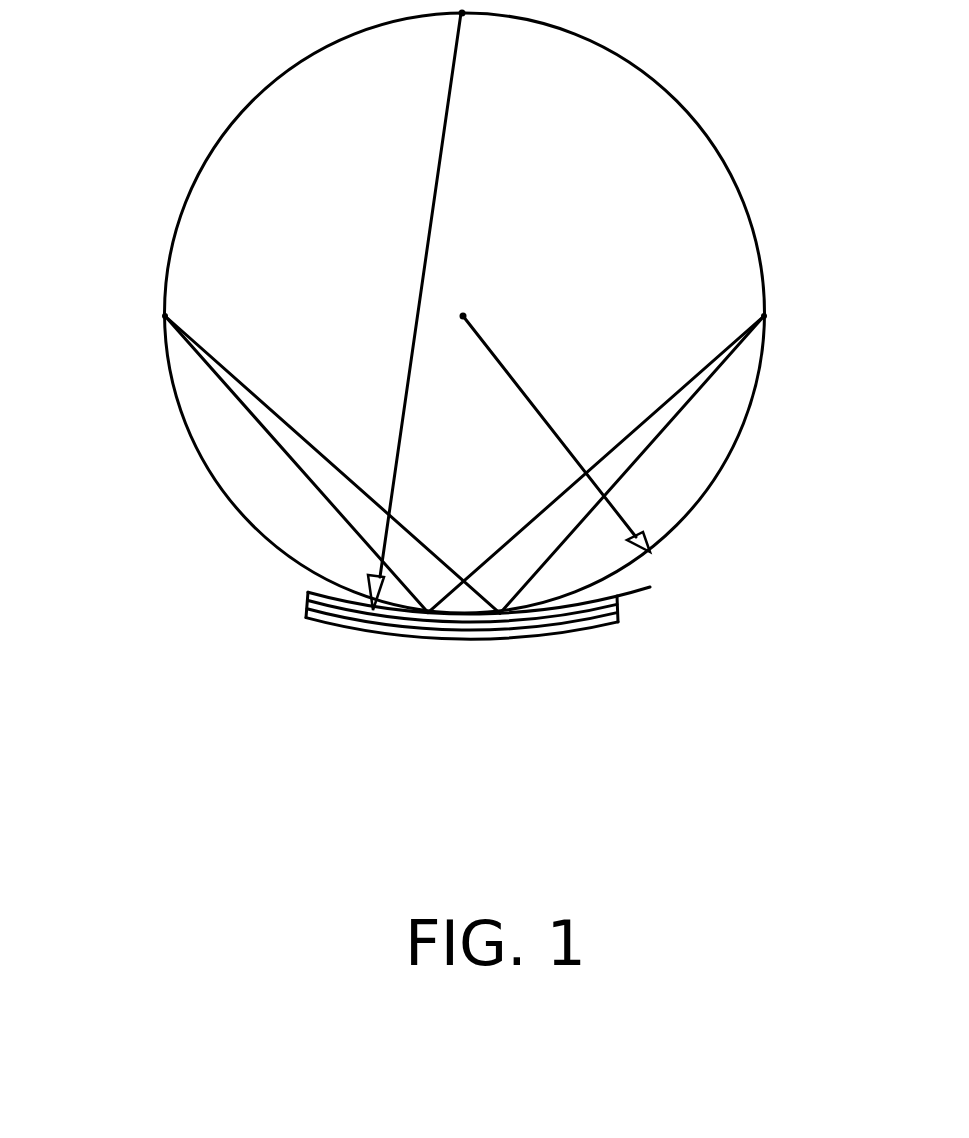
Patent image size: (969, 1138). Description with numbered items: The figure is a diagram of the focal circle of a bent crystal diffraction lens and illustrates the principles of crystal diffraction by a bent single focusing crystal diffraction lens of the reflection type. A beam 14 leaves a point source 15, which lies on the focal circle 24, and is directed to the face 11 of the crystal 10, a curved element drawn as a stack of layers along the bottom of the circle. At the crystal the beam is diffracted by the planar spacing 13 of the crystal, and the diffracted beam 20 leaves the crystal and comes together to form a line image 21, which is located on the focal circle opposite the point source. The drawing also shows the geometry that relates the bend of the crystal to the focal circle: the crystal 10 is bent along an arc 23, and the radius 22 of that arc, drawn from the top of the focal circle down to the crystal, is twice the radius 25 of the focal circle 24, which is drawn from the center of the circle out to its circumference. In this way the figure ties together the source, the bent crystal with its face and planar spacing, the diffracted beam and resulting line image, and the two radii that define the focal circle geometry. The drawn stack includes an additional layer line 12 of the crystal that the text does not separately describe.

The crystal 10 is at (469, 655).
The face 11 is at (350, 632).
The second layer 12 is at (445, 647).
The planar spacing 13 is at (565, 622).
The beam 14 is at (272, 427).
The point source 15 is at (165, 316).
The diffracted beam 20 is at (657, 422).
The line image 21 is at (764, 316).
The radius 22 is at (445, 148).
The arc 23 is at (643, 588).
The focal circle 24 is at (658, 82).
The radius 25 is at (500, 360).